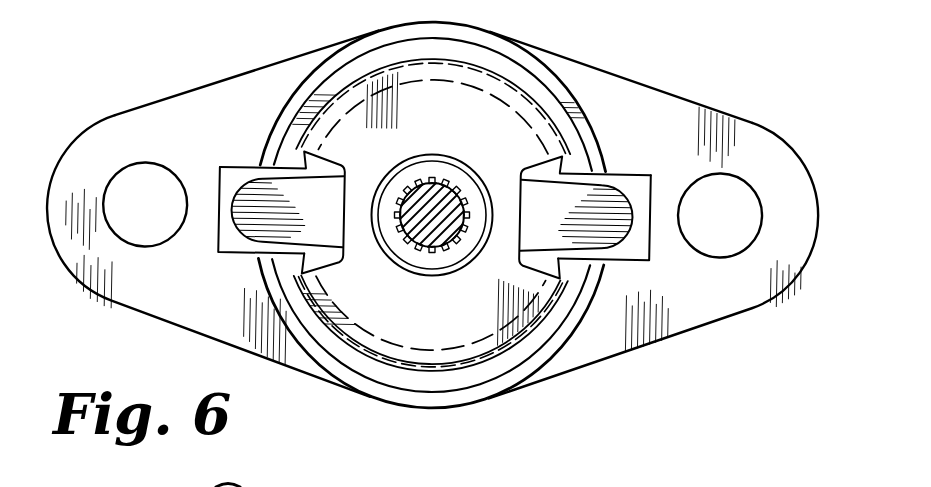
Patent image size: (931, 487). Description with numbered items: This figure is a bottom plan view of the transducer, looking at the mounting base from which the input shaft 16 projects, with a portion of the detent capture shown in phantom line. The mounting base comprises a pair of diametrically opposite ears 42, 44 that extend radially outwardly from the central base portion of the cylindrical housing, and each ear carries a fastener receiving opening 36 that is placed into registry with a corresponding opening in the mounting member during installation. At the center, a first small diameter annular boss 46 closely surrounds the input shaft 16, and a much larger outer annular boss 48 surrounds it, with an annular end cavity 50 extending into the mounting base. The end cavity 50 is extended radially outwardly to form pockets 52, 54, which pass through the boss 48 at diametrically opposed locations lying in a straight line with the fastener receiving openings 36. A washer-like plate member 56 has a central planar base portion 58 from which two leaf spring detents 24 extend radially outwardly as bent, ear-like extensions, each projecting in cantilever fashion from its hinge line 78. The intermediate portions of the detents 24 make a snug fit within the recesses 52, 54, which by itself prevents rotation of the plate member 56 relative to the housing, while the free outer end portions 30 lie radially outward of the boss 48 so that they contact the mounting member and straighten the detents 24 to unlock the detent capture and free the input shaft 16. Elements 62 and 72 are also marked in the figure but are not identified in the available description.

The input shaft 16 is at (440, 226).
The leaf spring detent 24 is at (262, 195).
The free outer end portion 30 is at (220, 188).
The fastener receiving opening 36 is at (125, 190).
The ear 42 is at (97, 294).
The ear 44 is at (292, 72).
The first small diameter annular boss 46 is at (453, 174).
The outer annular boss 48 is at (517, 360).
The annular end cavity 50 is at (262, 257).
The cavity portion 52 is at (218, 255).
The cavity portion 54 is at (650, 252).
The plate member 56 is at (398, 312).
The central planar base portion 58 is at (447, 335).
The boss ring 62 is at (580, 270).
The hub bore 72 is at (428, 177).
The hinge line 78 is at (346, 197).